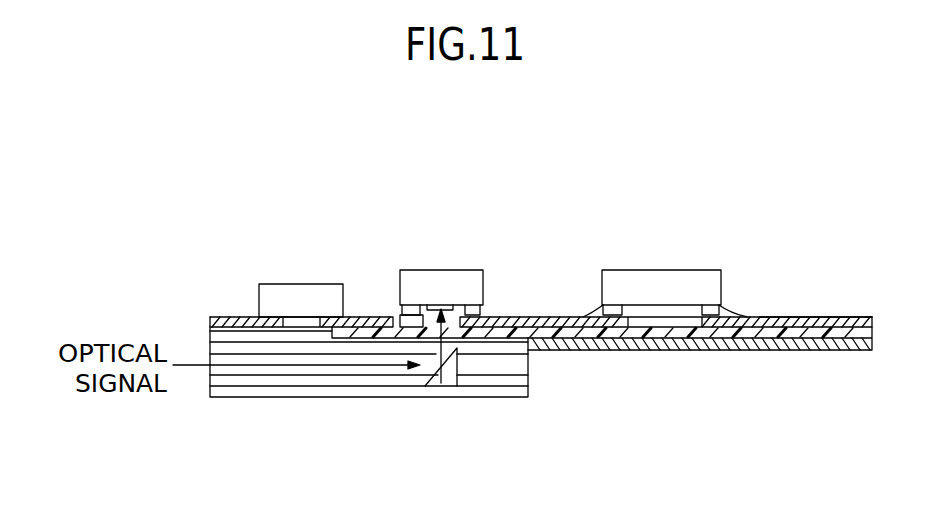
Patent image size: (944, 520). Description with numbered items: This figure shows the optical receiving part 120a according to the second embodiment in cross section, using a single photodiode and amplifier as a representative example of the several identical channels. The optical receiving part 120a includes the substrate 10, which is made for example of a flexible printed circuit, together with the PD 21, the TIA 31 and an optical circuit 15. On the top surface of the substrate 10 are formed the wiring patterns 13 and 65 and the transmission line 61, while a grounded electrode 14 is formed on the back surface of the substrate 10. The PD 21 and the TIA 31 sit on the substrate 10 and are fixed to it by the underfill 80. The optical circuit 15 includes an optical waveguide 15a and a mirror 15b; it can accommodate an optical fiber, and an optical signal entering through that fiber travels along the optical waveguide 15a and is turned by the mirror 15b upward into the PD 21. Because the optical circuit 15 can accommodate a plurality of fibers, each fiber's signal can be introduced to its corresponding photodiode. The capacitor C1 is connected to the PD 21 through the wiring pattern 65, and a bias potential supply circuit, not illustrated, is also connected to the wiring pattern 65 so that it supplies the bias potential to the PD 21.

The optical receiving part 120a is at (527, 235).
The PD 21 is at (417, 270).
The TIA 31 is at (655, 270).
The transmission line 61 is at (497, 316).
The wiring pattern 65 is at (369, 314).
The underfill 80 is at (733, 308).
The wiring pattern 13 is at (810, 316).
The substrate 10 is at (668, 350).
The grounded electrode 14 is at (781, 350).
The optical circuit 15 is at (530, 455).
The optical waveguide 15a is at (521, 363).
The mirror 15b is at (447, 380).
The capacitor C1 is at (303, 292).